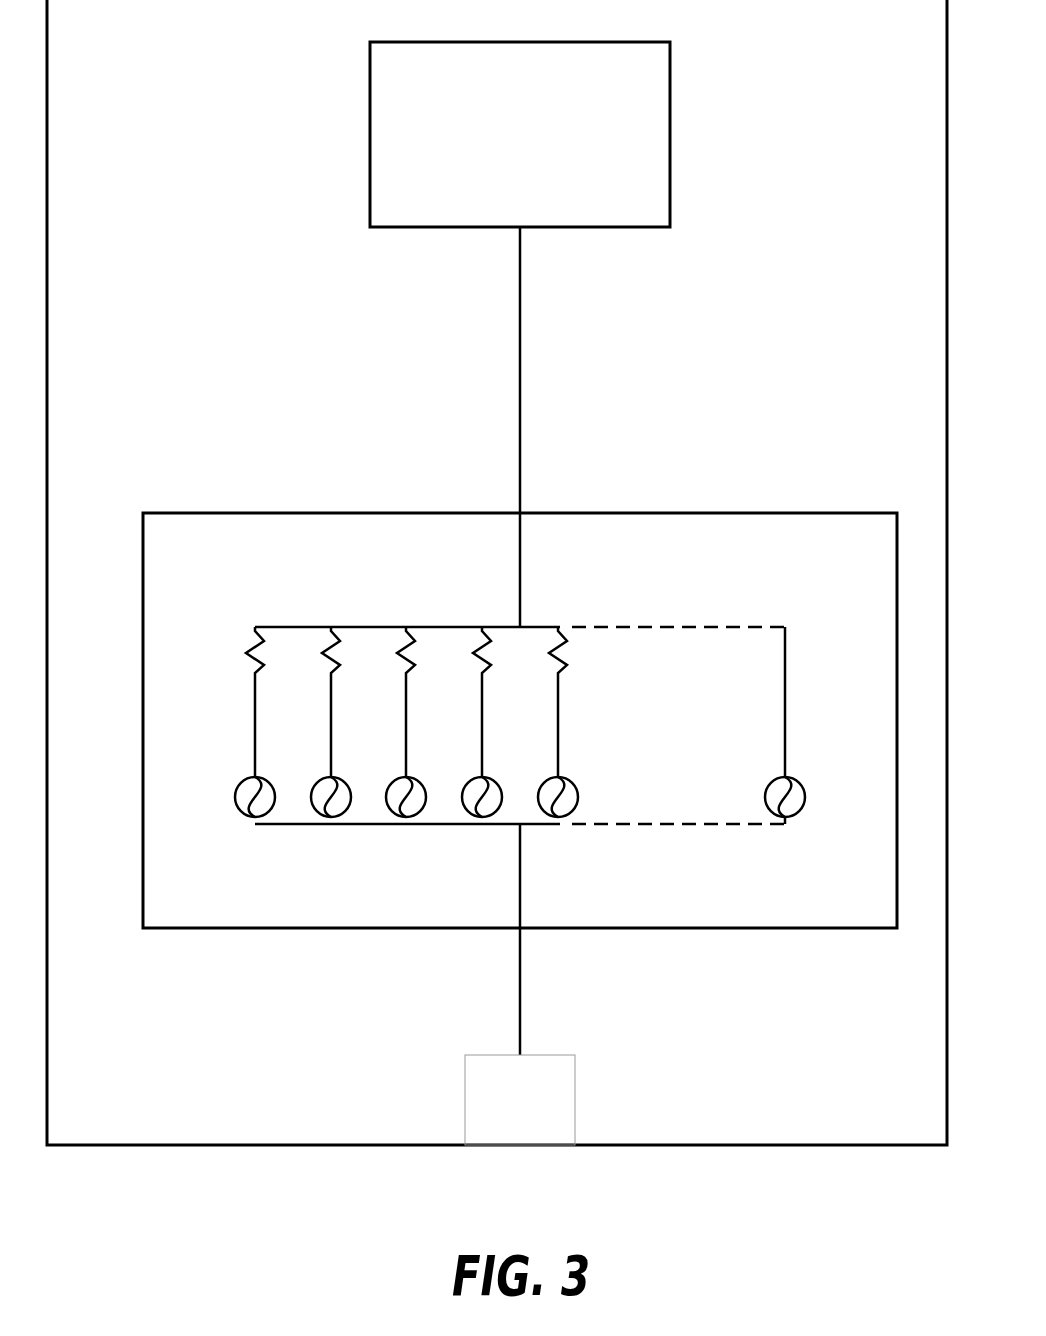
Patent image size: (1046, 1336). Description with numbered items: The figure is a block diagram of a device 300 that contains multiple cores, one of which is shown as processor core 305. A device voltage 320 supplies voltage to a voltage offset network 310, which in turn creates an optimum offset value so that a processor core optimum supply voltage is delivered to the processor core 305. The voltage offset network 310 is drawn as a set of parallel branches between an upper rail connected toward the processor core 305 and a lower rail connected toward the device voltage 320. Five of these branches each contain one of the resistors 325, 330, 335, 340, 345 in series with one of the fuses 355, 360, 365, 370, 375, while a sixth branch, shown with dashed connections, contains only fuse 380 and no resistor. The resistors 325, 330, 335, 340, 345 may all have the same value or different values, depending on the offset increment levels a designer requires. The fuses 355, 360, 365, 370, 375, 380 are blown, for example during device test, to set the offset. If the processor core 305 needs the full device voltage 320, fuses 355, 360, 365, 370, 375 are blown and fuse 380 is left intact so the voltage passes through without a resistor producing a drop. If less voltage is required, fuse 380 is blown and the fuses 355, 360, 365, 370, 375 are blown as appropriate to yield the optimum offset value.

The device 300 is at (130, 62).
The processor core 305 is at (503, 161).
The voltage offset network 310 is at (210, 609).
The device voltage 320 is at (503, 1141).
The resistor 325 is at (250, 656).
The resistor 330 is at (326, 656).
The resistor 335 is at (401, 656).
The resistor 340 is at (477, 656).
The resistor 345 is at (553, 656).
The fuse 355 is at (250, 778).
The fuse 360 is at (326, 778).
The fuse 365 is at (401, 778).
The fuse 370 is at (477, 778).
The fuse 375 is at (553, 778).
The fuse 380 is at (780, 778).